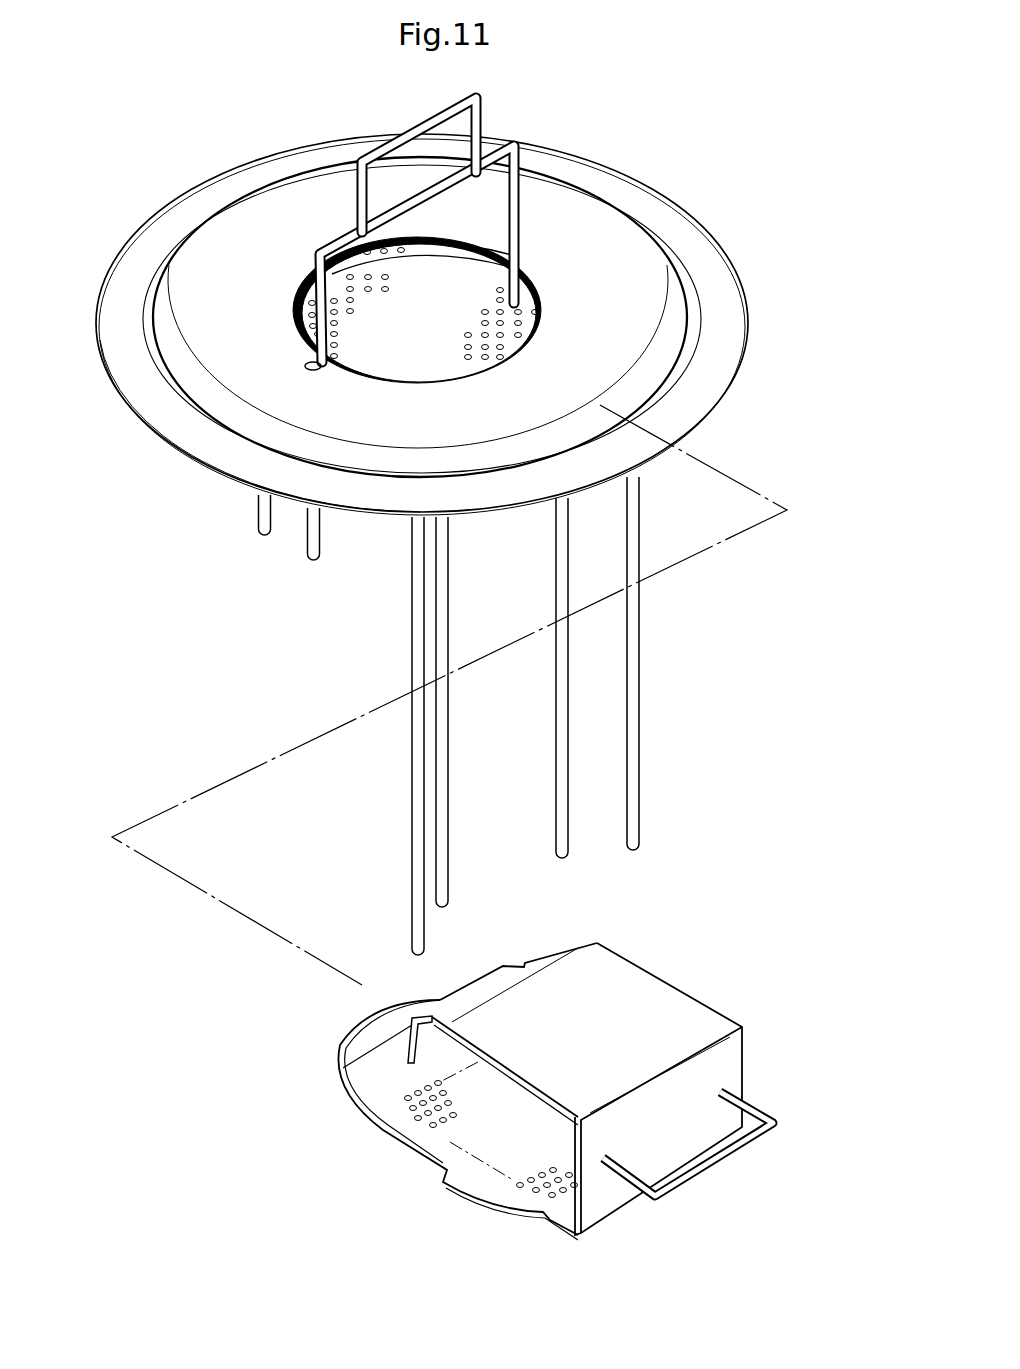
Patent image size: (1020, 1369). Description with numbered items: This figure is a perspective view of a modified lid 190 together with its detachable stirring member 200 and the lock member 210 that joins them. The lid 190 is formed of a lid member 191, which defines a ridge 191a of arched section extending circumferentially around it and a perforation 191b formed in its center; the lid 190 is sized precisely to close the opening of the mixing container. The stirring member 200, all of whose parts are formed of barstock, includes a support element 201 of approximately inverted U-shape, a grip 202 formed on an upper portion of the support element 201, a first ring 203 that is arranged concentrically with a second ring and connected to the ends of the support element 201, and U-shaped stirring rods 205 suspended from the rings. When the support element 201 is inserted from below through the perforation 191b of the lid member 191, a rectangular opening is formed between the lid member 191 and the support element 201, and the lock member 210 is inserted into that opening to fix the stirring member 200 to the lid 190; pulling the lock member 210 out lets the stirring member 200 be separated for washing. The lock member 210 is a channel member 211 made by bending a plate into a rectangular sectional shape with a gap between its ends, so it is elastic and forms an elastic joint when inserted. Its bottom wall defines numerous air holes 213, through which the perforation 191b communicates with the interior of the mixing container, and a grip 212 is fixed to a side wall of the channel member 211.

The lid 190 is at (680, 185).
The lid member 191 is at (205, 245).
The ridge 191a is at (208, 447).
The perforation 191b is at (600, 405).
The stirring member 200 is at (655, 769).
The support element 201 is at (513, 205).
The grip 202 is at (480, 112).
The first ring 203 is at (424, 256).
The stirring rods 205 is at (307, 560).
The lock member 210 is at (543, 1057).
The channel member 211 is at (650, 1000).
The grip 212 is at (693, 1176).
The air holes 213 is at (428, 1125).